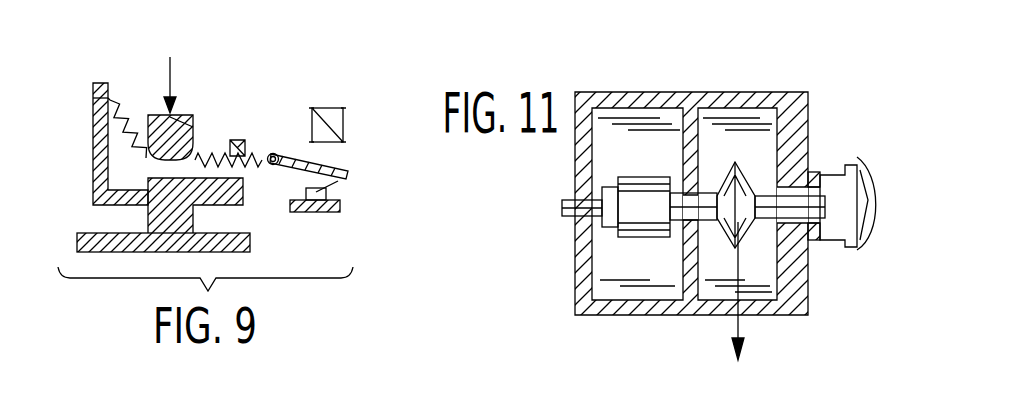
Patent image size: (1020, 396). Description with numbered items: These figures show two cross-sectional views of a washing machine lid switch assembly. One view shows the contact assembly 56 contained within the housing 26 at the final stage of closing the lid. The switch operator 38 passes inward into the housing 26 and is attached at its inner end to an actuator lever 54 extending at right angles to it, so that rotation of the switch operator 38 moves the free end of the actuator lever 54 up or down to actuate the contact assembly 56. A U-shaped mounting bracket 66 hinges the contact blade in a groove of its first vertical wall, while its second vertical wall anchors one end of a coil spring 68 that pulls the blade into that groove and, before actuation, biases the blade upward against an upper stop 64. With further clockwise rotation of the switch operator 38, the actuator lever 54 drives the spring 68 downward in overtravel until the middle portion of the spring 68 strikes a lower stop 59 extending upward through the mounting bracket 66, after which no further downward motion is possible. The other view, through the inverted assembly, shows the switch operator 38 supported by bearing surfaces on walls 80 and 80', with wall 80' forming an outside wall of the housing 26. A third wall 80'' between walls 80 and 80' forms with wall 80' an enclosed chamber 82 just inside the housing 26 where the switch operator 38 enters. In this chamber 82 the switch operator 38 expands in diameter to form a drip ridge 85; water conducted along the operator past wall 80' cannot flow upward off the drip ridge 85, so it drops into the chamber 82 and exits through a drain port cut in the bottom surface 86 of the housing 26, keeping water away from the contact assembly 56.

In FIG. 9, the actuator lever 54 is at (193, 112).
In FIG. 9, the contact assembly 56 is at (256, 90).
In FIG. 9, the lower stop 59 is at (213, 216).
In FIG. 9, the upper stop 64 is at (337, 128).
In FIG. 9, the mounting bracket 66 is at (93, 190).
In FIG. 9, the coil spring 68 is at (143, 112).
In FIG. 11, the housing 26 is at (800, 108).
In FIG. 11, the switch operator 38 is at (825, 225).
In FIG. 11, the wall 80 is at (637, 243).
In FIG. 11, the wall 80' is at (846, 260).
In FIG. 11, the third wall 80'' is at (717, 314).
In FIG. 11, the chamber 82 is at (750, 160).
In FIG. 11, the drip ridge 85 is at (722, 180).
In FIG. 11, the bottom surface 86 is at (746, 322).